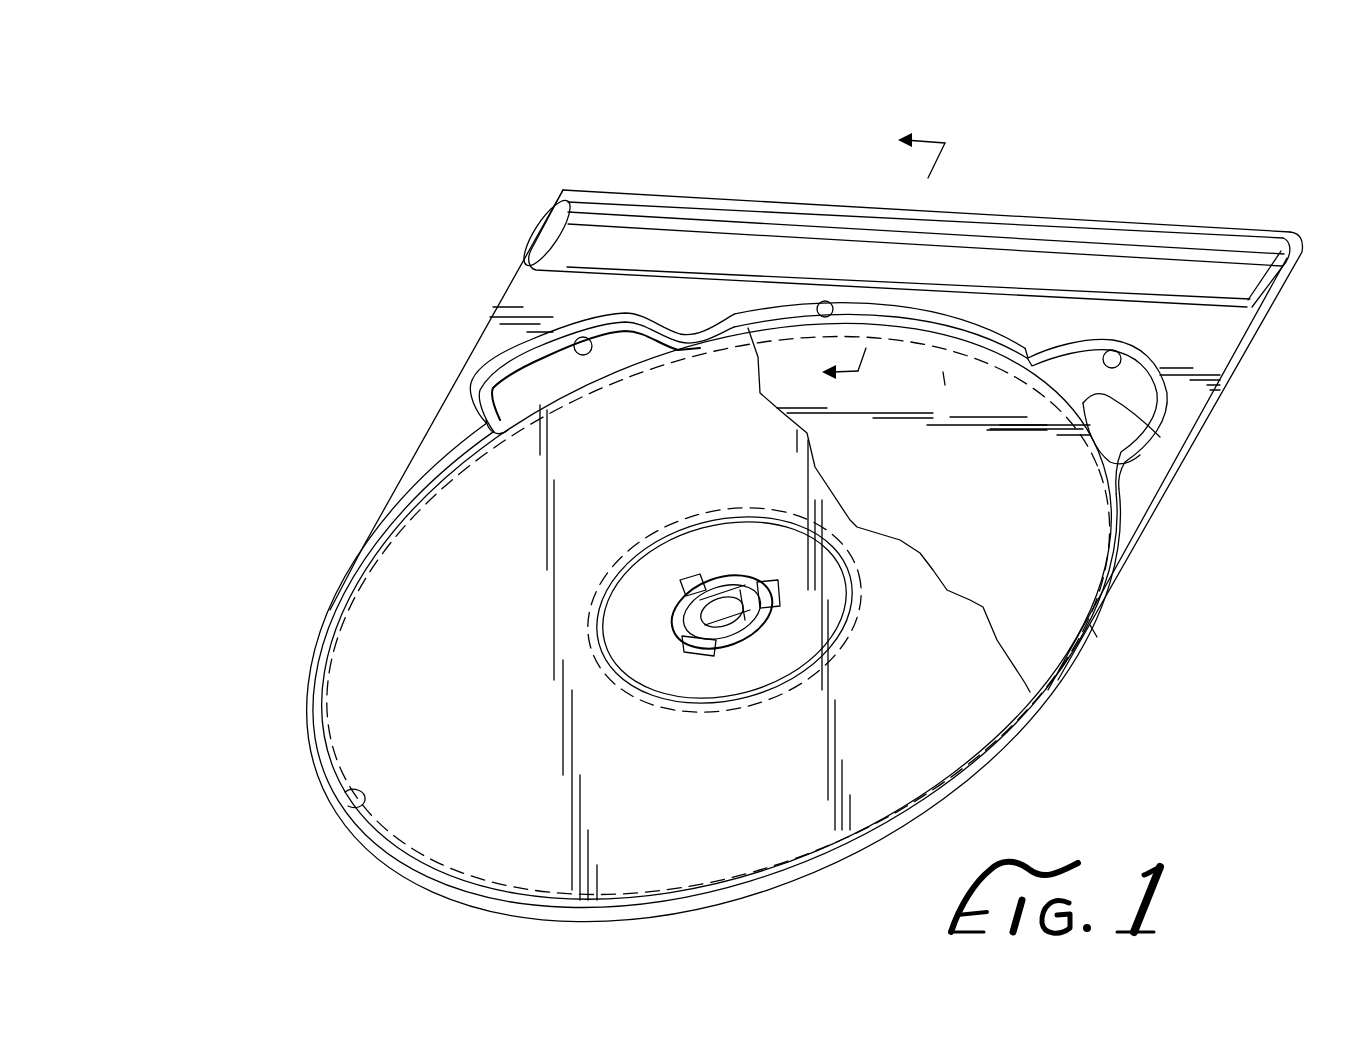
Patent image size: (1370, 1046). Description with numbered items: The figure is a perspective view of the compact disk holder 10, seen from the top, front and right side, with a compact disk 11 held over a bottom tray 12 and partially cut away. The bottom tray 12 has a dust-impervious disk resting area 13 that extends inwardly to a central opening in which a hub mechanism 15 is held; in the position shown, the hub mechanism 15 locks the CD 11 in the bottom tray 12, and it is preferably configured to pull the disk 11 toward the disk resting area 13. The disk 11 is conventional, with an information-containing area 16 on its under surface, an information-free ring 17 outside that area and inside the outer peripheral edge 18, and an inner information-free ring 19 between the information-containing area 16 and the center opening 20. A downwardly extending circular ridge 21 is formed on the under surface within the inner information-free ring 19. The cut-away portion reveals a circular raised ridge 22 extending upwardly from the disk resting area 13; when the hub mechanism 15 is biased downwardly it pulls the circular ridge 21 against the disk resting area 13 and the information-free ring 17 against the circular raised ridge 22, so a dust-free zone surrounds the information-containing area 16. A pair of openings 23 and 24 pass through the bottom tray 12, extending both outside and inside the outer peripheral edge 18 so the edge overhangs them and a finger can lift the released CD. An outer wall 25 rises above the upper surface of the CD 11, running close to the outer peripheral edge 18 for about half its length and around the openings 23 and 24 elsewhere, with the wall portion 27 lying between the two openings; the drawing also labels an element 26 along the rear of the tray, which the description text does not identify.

The compact disk holder 10 is at (365, 148).
The compact disk 11 is at (480, 517).
The bottom tray 12 is at (1100, 532).
The disk resting area 13 is at (943, 372).
The hub mechanism 15 is at (713, 607).
The information-containing area 16 is at (387, 692).
The information-free ring 17 is at (337, 797).
The outer peripheral edge 18 is at (481, 470).
The inner information-free ring 19 is at (705, 514).
The center opening 20 is at (735, 574).
The downwardly extending circular ridge 21 is at (846, 582).
The circular raised ridge 22 is at (1090, 397).
The opening 23 is at (577, 330).
The opening 24 is at (1098, 352).
The outer wall 25 is at (363, 545).
The spine 26 is at (637, 223).
The wall portion 27 is at (821, 303).